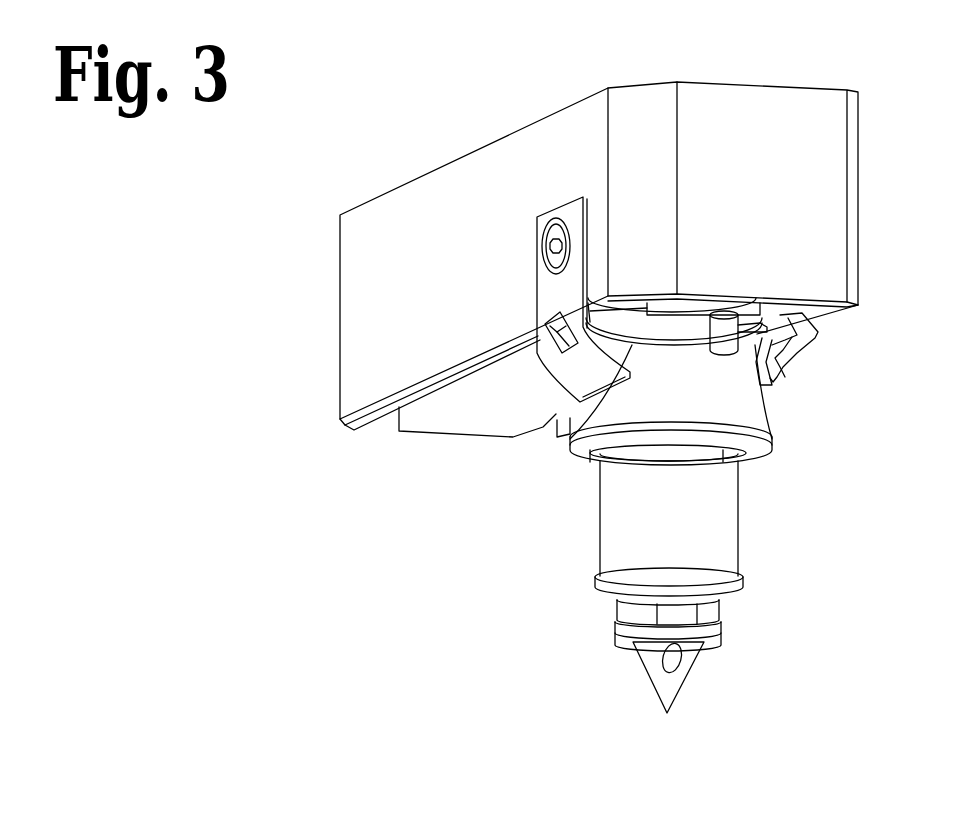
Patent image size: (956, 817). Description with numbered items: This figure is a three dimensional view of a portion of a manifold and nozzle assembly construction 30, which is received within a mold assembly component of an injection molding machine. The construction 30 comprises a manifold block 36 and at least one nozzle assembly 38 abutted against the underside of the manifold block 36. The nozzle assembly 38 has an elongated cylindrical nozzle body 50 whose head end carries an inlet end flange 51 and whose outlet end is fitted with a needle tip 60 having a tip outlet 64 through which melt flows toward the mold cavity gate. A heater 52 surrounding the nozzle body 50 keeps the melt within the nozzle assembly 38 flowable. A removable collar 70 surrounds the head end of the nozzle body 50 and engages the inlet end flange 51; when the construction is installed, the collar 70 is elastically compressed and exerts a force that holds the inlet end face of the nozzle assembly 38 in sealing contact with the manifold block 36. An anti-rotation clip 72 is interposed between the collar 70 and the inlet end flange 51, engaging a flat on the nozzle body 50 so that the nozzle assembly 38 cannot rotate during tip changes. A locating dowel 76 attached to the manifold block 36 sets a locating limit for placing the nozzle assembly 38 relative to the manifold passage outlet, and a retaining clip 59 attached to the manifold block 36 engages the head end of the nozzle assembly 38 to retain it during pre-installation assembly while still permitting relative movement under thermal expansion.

The manifold and nozzle assembly construction 30 is at (392, 111).
The manifold block 36 is at (450, 270).
The nozzle assembly 38 is at (766, 541).
The nozzle body 50 is at (628, 455).
The inlet end flange 51 is at (759, 357).
The heater 52 is at (630, 547).
The retaining clip 59 is at (792, 350).
The needle tip 60 is at (683, 645).
The tip outlet 64 is at (668, 667).
The collar 70 is at (694, 408).
The anti-rotation clip 72 is at (668, 332).
The locating dowel 76 is at (724, 340).